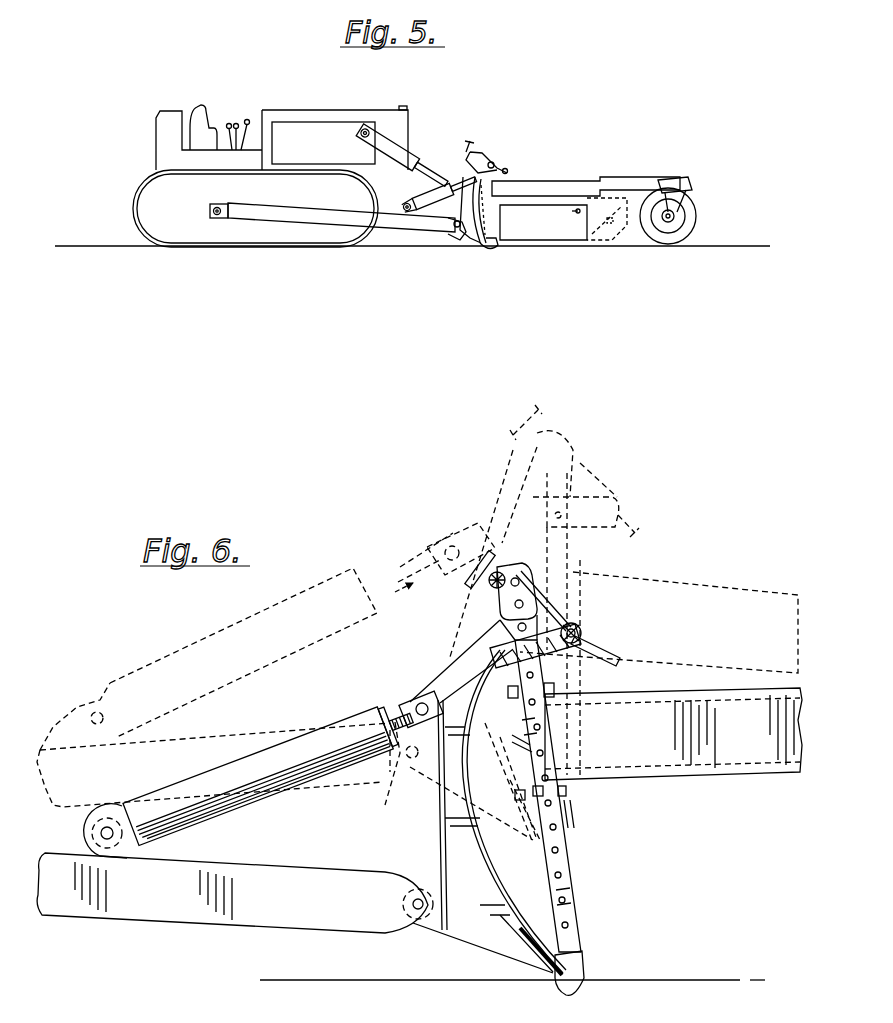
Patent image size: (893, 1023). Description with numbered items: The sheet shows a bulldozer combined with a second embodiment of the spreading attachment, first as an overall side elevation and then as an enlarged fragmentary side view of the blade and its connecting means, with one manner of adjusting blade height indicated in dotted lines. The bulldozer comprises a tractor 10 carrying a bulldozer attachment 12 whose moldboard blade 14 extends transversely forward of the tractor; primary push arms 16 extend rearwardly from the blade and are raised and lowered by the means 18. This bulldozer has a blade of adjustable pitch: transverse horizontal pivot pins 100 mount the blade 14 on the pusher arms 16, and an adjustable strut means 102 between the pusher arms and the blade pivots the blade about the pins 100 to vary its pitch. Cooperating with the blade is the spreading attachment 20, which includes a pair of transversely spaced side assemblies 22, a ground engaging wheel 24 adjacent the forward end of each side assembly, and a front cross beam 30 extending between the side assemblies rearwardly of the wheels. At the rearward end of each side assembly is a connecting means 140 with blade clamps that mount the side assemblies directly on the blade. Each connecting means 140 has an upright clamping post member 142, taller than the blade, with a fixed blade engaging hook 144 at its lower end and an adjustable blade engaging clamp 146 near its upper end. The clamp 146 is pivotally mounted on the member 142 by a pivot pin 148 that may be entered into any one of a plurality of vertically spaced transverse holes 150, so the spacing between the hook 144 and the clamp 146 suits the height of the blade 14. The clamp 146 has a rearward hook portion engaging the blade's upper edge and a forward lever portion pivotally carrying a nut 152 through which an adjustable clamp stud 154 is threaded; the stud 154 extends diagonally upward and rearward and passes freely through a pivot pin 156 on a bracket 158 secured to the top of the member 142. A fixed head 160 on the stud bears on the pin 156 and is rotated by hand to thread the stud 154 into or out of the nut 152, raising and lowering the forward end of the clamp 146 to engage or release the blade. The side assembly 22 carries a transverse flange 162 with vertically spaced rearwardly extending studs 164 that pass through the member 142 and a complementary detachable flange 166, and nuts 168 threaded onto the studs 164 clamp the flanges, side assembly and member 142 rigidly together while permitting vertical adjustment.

In FIG. 5, the tractor 10 is at (292, 106).
In FIG. 6, the tractor 10 is at (553, 445).
In FIG. 5, the bulldozer attachment 12 is at (462, 140).
In FIG. 5, the moldboard blade 14 is at (498, 222).
In FIG. 6, the moldboard blade 14 is at (500, 912).
In FIG. 5, the primary push arms 16 is at (271, 213).
In FIG. 6, the primary push arms 16 is at (53, 870).
In FIG. 5, the means for raising and lowering the blade 18 is at (400, 142).
In FIG. 5, the spreading attachment 20 is at (594, 189).
In FIG. 5, the side assemblies 22 is at (578, 186).
In FIG. 6, the side assemblies 22 is at (703, 720).
In FIG. 5, the ground engaging wheel 24 is at (662, 244).
In FIG. 5, the front cross beam 30 is at (607, 241).
In FIG. 5, the pivot pins 100 is at (462, 229).
In FIG. 6, the pivot pins 100 is at (418, 898).
In FIG. 5, the adjustable strut means 102 is at (432, 180).
In FIG. 6, the adjustable strut means 102 is at (263, 756).
In FIG. 5, the connecting means 140 is at (514, 177).
In FIG. 6, the connecting means 140 is at (591, 817).
In FIG. 6, the clamping post member 142 is at (575, 917).
In FIG. 6, the blade engaging hook 144 is at (583, 958).
In FIG. 6, the adjustable blade engaging clamp 146 is at (510, 631).
In FIG. 6, the pivot pin 148 is at (553, 672).
In FIG. 6, the transverse holes 150 is at (548, 752).
In FIG. 6, the nut 152 is at (581, 627).
In FIG. 6, the adjustable clamp stud 154 is at (590, 650).
In FIG. 6, the pivot pin 156 is at (507, 567).
In FIG. 6, the bracket 158 is at (520, 574).
In FIG. 6, the fixed head 160 is at (470, 579).
In FIG. 6, the transverse flange 162 is at (567, 803).
In FIG. 6, the studs 164 is at (554, 688).
In FIG. 6, the detachable flange 166 is at (526, 748).
In FIG. 6, the nuts 168 is at (508, 694).